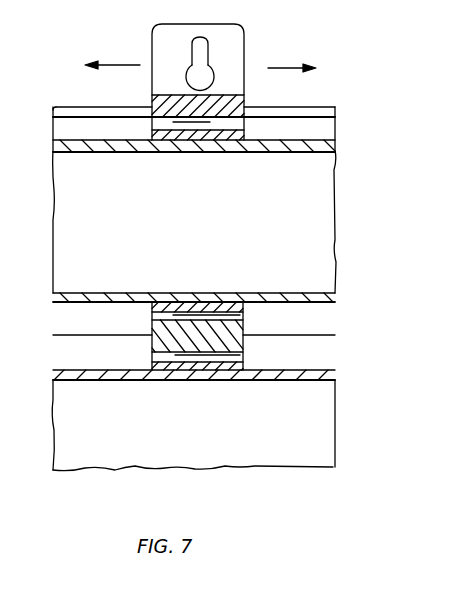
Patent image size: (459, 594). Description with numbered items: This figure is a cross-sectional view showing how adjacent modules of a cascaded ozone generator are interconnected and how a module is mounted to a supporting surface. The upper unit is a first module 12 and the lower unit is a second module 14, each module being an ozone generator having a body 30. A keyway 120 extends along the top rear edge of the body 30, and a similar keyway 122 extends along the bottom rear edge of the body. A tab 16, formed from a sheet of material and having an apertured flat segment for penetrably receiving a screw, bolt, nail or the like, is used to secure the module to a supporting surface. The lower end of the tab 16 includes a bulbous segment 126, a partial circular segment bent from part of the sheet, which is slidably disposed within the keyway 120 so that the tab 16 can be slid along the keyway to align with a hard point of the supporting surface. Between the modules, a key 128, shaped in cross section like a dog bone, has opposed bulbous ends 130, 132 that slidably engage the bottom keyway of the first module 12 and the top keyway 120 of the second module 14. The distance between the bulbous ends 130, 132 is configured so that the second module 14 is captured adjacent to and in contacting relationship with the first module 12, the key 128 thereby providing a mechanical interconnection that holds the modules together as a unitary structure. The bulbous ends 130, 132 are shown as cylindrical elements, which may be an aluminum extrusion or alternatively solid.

The first module 12 is at (333, 161).
The second module 14 is at (337, 445).
The tab 16 is at (247, 31).
The body 30 is at (288, 221).
The keyway 120 is at (312, 128).
The keyway 122 is at (298, 313).
The bulbous segment 126 is at (188, 126).
The key 128 is at (220, 327).
The bulbous end 130 is at (153, 303).
The bulbous end 132 is at (140, 369).